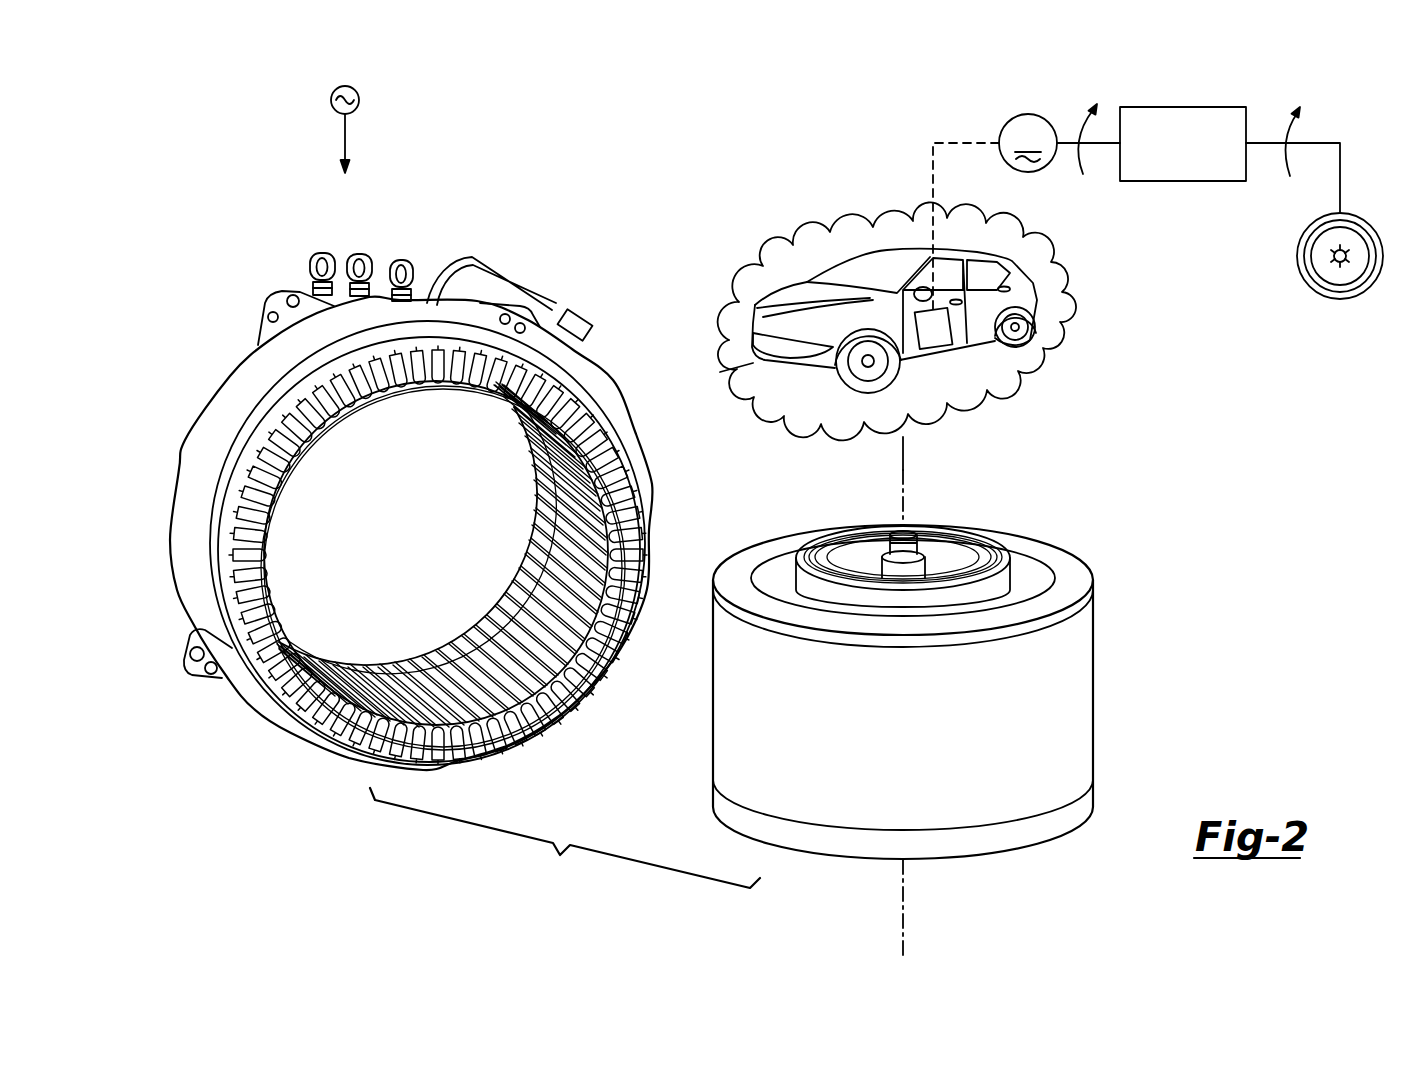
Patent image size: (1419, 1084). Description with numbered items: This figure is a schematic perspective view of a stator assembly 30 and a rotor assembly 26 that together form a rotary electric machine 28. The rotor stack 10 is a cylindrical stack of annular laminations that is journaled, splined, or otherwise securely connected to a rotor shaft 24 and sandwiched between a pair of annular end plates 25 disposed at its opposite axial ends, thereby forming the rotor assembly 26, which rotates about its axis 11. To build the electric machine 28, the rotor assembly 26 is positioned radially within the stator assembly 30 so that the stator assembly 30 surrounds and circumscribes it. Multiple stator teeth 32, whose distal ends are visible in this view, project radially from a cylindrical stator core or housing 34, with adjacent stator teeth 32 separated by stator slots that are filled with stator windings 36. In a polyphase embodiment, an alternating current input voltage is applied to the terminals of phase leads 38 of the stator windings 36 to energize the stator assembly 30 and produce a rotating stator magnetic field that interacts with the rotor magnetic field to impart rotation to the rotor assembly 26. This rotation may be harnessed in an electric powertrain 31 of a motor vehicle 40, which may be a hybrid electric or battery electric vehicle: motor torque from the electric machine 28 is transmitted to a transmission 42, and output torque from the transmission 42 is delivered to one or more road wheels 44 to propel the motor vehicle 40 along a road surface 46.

The rotor stack 10 is at (1045, 717).
The axis 11 is at (906, 886).
The rotor shaft 24 is at (914, 536).
The annular end plates 25 is at (1073, 575).
The rotor assembly 26 is at (1185, 622).
The rotary electric machine 28 is at (713, 502).
The stator assembly 30 is at (208, 305).
The electric powertrain 31 is at (1127, 195).
The stator teeth 32 is at (465, 694).
The stator core or housing 34 is at (230, 405).
The stator windings 36 is at (402, 658).
The phase leads 38 is at (322, 252).
The motor vehicle 40 is at (790, 188).
The transmission 42 is at (1182, 181).
The road wheels 44 is at (1297, 258).
The road surface 46 is at (755, 386).